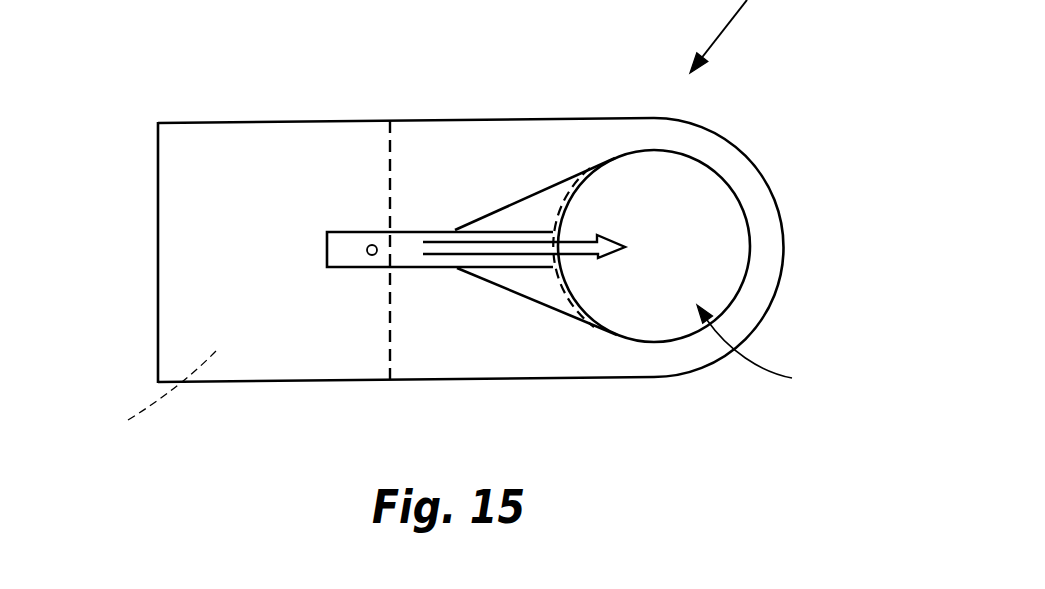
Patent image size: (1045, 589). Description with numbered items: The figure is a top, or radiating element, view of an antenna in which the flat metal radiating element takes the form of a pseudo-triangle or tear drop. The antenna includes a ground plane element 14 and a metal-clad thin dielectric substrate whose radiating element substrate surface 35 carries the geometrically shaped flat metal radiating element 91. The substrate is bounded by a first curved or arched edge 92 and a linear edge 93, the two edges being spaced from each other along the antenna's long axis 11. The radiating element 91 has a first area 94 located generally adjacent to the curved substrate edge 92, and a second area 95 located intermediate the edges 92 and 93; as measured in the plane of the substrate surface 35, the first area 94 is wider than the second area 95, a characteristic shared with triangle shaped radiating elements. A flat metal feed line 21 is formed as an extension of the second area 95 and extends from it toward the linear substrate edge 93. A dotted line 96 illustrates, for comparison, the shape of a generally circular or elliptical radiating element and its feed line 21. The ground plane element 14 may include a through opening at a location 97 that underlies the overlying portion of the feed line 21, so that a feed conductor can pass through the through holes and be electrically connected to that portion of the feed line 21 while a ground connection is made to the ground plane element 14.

The long axis 11 is at (570, 240).
The ground plane element 14 is at (147, 393).
The feed line 21 is at (340, 243).
The radiating element substrate surface 35 is at (432, 147).
The radiating element 91 is at (733, 190).
The curved or arched edge 92 is at (777, 290).
The linear edge 93 is at (158, 257).
The first area 94 is at (765, 354).
The second area 95 is at (540, 282).
The dotted line 96 is at (563, 288).
The through opening location 97 is at (370, 257).